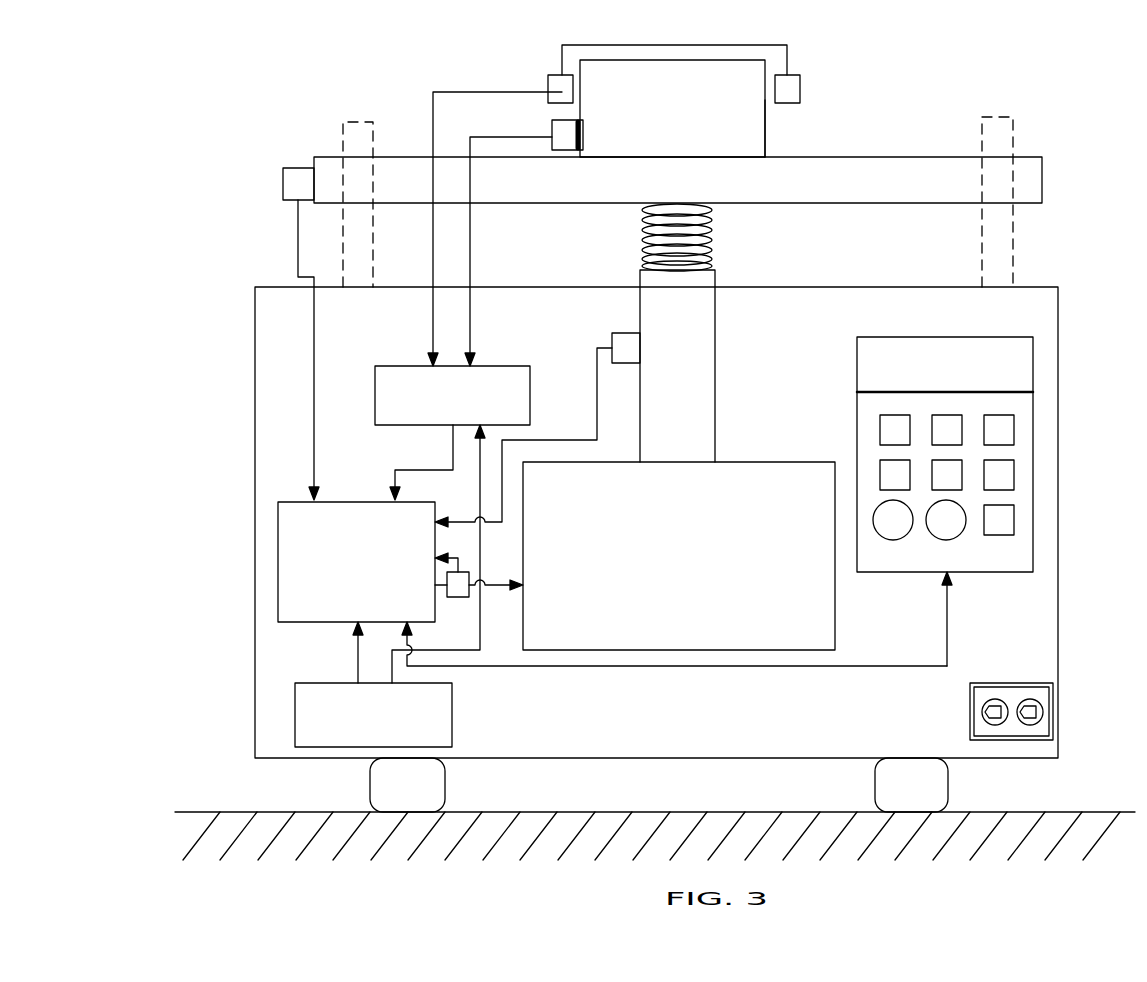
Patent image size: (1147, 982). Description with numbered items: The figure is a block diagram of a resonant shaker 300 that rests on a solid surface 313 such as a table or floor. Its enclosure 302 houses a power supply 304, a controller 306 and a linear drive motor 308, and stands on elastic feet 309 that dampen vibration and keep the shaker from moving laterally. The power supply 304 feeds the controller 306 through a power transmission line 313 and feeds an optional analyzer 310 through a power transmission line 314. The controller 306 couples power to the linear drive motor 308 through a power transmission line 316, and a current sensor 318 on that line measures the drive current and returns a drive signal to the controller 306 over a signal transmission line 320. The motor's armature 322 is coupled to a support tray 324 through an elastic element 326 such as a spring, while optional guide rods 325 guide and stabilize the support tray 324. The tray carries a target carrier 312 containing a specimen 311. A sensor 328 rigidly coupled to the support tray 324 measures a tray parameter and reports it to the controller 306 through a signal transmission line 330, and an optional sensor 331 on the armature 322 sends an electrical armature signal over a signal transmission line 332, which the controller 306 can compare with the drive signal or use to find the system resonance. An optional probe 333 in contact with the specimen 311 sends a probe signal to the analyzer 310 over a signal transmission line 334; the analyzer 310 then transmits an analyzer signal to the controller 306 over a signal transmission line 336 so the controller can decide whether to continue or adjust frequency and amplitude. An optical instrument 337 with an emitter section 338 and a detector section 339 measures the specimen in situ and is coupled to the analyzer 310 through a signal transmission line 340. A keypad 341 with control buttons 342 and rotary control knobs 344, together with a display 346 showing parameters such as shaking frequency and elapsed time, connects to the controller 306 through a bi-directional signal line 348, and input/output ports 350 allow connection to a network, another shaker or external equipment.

The resonant shaker 300 is at (362, 86).
The enclosure 302 is at (256, 332).
The power supply 304 is at (340, 683).
The controller 306 is at (356, 562).
The linear drive motor 308 is at (679, 556).
The feet 309 is at (659, 785).
The analyzer 310 is at (452, 395).
The specimen 311 is at (672, 108).
The target carrier 312 is at (766, 138).
The solid surface / power transmission line 313 is at (358, 656).
The power transmission line 314 is at (481, 623).
The power transmission line 316 is at (506, 585).
The current sensor 318 is at (463, 597).
The signal transmission line 320 is at (467, 553).
The armature 322 is at (677, 366).
The support tray 324 is at (678, 180).
The guide rods 325 is at (373, 278).
The elastic element 326 is at (642, 250).
The sensor 328 is at (298, 168).
The signal transmission line 330 is at (298, 246).
The sensor 331 is at (626, 334).
The signal transmission line 332 is at (597, 378).
The probe 333 is at (552, 122).
The signal transmission line 334 is at (470, 246).
The signal transmission line 336 is at (453, 466).
The optical instrument 337 is at (546, 58).
The emitter section 338 is at (800, 87).
The detector section 339 is at (548, 79).
The signal transmission line 340 is at (433, 246).
The keypad 341 is at (856, 432).
The control buttons 342 is at (1000, 535).
The rotary control knobs 344 is at (893, 540).
The display 346 is at (945, 454).
The bi-directional signal line 348 is at (676, 668).
The input/output ports 350 is at (1008, 683).